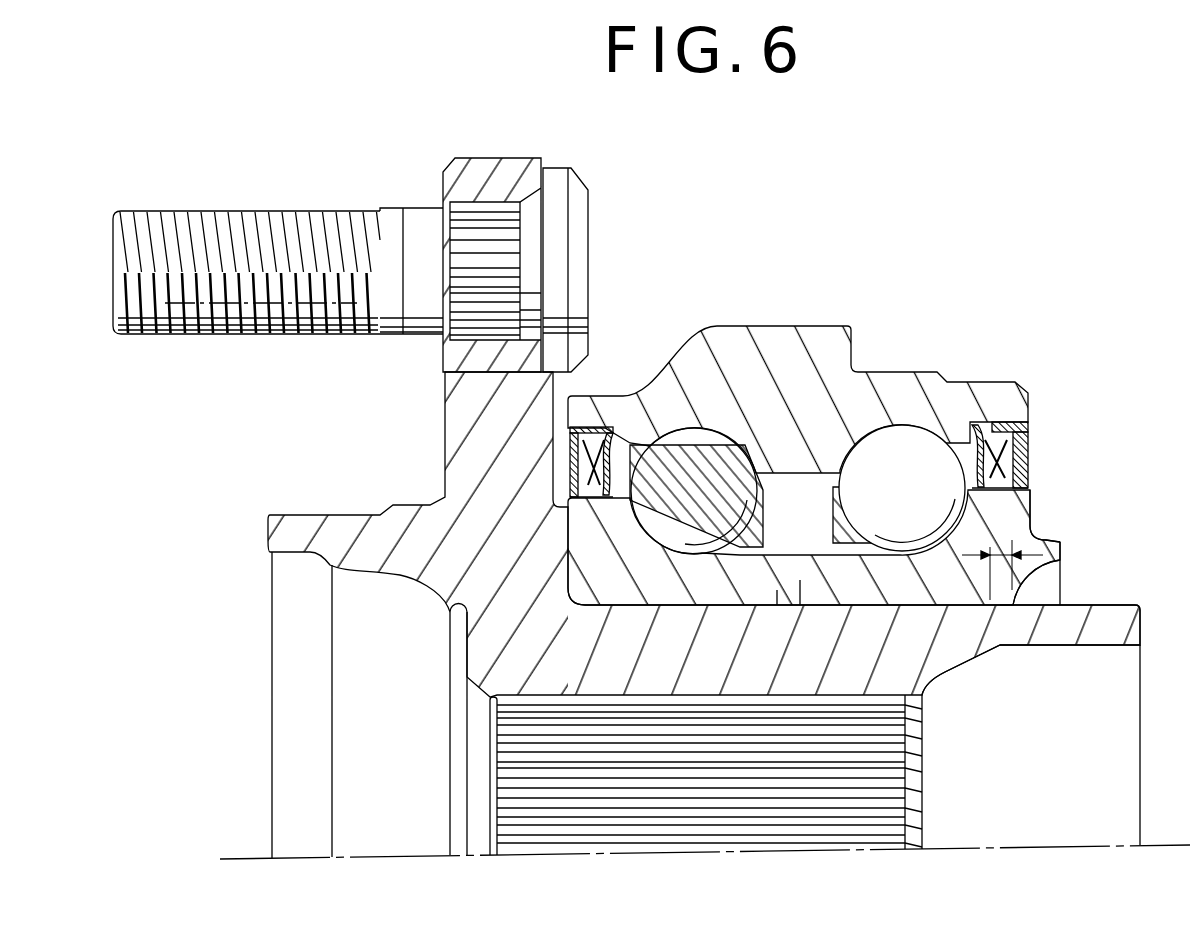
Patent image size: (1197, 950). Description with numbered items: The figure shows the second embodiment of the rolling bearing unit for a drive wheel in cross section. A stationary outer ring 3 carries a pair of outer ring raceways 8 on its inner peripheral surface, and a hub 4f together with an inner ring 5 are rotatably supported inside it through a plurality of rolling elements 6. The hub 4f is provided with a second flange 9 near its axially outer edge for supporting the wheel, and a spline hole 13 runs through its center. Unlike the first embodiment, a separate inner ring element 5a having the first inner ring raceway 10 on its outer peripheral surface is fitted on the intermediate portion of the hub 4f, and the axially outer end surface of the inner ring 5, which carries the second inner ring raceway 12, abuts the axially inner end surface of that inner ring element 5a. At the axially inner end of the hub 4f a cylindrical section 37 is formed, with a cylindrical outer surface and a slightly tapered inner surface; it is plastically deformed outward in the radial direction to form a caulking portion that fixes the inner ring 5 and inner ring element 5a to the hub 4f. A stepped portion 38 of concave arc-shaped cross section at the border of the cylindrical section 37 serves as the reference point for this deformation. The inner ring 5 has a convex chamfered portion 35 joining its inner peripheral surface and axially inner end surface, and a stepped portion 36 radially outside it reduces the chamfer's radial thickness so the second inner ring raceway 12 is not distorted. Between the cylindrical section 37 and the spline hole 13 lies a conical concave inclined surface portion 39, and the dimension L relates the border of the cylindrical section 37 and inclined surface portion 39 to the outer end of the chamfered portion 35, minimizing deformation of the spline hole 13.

The outer ring 3 is at (788, 350).
The hub 4f is at (303, 530).
The inner ring 5 is at (993, 517).
The inner ring element 5a is at (777, 590).
The rolling elements 6 is at (688, 440).
The outer ring raceways 8 is at (705, 445).
The second flange 9 is at (455, 180).
The first inner ring raceway 10 is at (668, 443).
The second inner ring raceway 12 is at (950, 477).
The spline hole 13 is at (582, 697).
The chamfered portion 35 is at (1030, 592).
The stepped portion 36 is at (1050, 537).
The cylindrical section 37 is at (1127, 627).
The stepped portion 38 is at (1062, 585).
The inclined surface portion 39 is at (960, 663).
The element L is at (1015, 532).